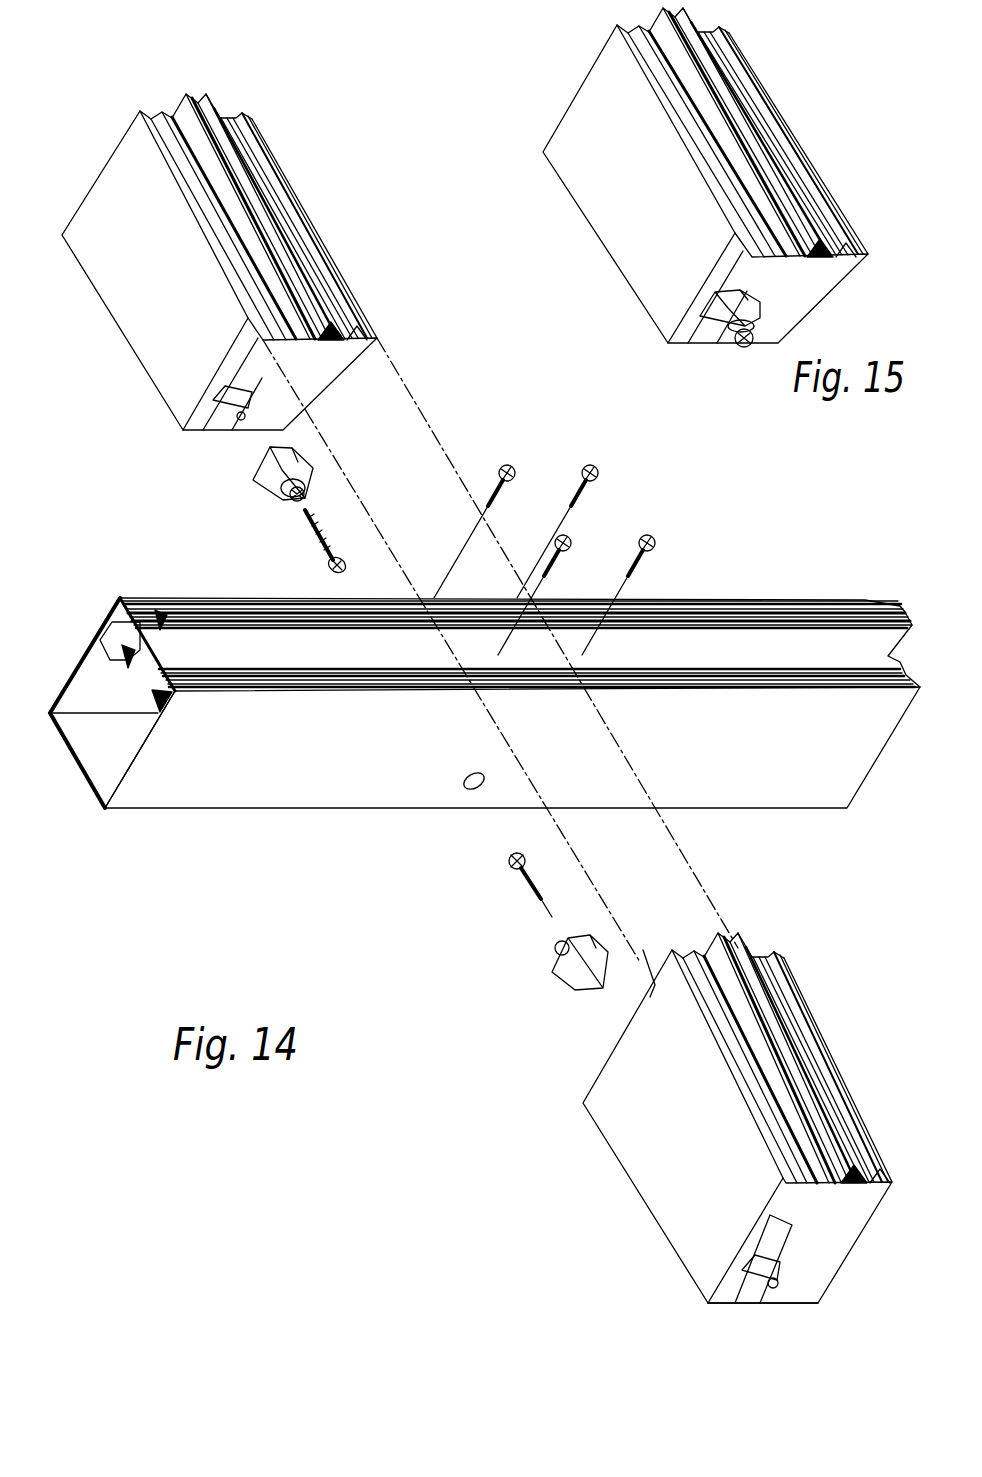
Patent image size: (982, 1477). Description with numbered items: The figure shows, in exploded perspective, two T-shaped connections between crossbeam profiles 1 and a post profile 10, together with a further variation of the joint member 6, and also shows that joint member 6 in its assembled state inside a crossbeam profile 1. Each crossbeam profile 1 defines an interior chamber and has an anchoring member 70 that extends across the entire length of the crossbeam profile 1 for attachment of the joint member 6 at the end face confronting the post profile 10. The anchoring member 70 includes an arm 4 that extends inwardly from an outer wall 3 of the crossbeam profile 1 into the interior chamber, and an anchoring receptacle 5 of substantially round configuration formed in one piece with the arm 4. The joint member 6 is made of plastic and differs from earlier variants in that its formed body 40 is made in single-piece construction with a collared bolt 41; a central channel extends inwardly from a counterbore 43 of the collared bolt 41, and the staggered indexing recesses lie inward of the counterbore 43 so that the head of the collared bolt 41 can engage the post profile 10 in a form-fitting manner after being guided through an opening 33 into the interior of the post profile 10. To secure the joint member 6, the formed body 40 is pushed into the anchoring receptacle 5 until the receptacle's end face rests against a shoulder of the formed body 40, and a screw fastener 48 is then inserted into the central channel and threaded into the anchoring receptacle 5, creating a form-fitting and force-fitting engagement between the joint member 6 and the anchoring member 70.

In FIG. 14, the crossbeam profile 1 is at (112, 327).
In FIG. 15, the crossbeam profile 1 is at (583, 233).
In FIG. 14, the outer wall 3 is at (718, 1307).
In FIG. 14, the arm 4 is at (757, 1288).
In FIG. 14, the anchoring receptacle 5 is at (227, 405).
In FIG. 14, the joint member 6 is at (313, 457).
In FIG. 14, the post profile 10 is at (210, 817).
In FIG. 14, the opening 33 is at (462, 790).
In FIG. 15, the formed body 40 is at (690, 347).
In FIG. 15, the collared bolt 41 is at (765, 340).
In FIG. 14, the counterbore 43 is at (287, 512).
In FIG. 14, the screw fastener 48 is at (322, 557).
In FIG. 15, the screw fastener 48 is at (737, 348).
In FIG. 14, the anchoring member 70 is at (240, 420).